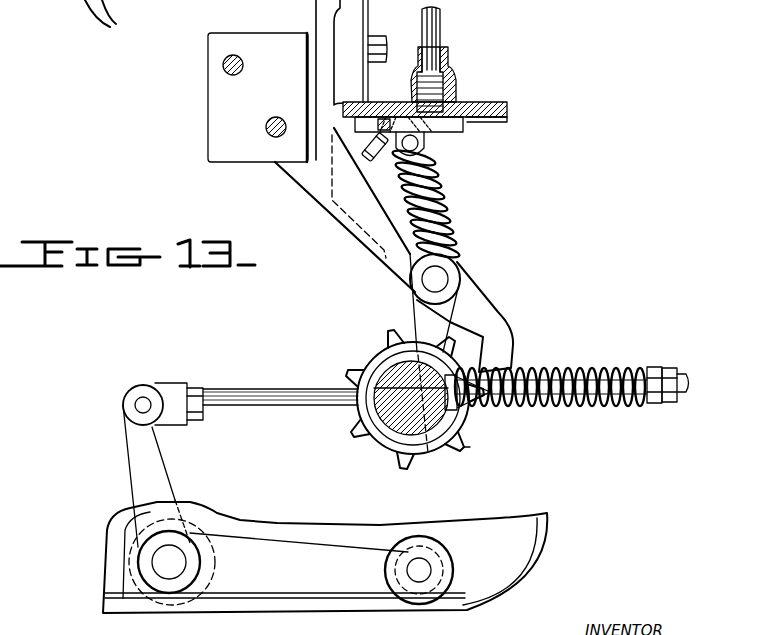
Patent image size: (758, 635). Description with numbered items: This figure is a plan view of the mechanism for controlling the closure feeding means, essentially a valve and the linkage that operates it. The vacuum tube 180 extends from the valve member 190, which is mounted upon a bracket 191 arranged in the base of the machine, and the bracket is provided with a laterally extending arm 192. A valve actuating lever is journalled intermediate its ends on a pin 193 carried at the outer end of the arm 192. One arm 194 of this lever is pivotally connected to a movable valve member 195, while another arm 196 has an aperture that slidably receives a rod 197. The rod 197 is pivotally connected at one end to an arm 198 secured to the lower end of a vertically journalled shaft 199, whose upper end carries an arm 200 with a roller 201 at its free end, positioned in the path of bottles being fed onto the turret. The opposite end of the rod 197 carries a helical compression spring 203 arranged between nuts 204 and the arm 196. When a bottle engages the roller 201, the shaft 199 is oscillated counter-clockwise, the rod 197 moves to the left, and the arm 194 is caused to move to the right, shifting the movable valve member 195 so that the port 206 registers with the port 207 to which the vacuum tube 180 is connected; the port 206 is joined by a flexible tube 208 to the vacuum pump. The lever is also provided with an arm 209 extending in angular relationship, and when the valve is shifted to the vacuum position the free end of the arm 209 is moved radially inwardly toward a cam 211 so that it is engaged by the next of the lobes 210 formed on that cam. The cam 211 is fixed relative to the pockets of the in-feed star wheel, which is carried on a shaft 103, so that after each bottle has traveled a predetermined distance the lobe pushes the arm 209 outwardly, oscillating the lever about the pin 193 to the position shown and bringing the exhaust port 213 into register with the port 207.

The shaft 103 is at (428, 458).
The vacuum tube 180 is at (437, 24).
The valve member 190 is at (487, 104).
The bracket 191 is at (213, 107).
The arm 192 is at (383, 260).
The pin 193 is at (447, 277).
The arm 194 is at (440, 204).
The movable valve member 195 is at (463, 130).
The arm 196 is at (418, 320).
The rod 197 is at (255, 395).
The arm 198 is at (132, 465).
The shaft 199 is at (172, 562).
The arm 200 is at (325, 552).
The roller 201 is at (443, 564).
The helical compression spring 203 is at (562, 370).
The nuts 204 is at (673, 370).
The port 206 is at (387, 114).
The port 207 is at (456, 96).
The flexible tube 208 is at (380, 160).
The arm 209 is at (492, 308).
The lobes 210 is at (464, 447).
The cam 211 is at (382, 448).
The exhaust port 213 is at (441, 133).